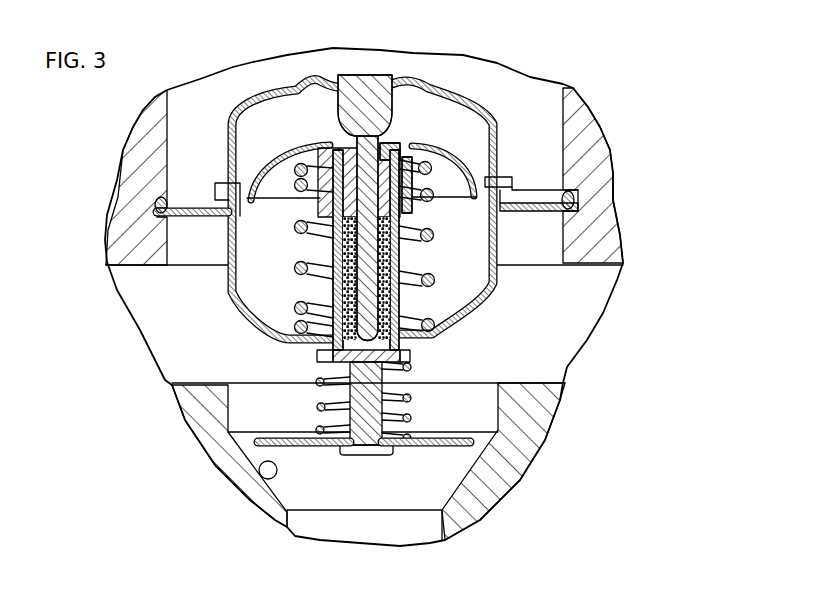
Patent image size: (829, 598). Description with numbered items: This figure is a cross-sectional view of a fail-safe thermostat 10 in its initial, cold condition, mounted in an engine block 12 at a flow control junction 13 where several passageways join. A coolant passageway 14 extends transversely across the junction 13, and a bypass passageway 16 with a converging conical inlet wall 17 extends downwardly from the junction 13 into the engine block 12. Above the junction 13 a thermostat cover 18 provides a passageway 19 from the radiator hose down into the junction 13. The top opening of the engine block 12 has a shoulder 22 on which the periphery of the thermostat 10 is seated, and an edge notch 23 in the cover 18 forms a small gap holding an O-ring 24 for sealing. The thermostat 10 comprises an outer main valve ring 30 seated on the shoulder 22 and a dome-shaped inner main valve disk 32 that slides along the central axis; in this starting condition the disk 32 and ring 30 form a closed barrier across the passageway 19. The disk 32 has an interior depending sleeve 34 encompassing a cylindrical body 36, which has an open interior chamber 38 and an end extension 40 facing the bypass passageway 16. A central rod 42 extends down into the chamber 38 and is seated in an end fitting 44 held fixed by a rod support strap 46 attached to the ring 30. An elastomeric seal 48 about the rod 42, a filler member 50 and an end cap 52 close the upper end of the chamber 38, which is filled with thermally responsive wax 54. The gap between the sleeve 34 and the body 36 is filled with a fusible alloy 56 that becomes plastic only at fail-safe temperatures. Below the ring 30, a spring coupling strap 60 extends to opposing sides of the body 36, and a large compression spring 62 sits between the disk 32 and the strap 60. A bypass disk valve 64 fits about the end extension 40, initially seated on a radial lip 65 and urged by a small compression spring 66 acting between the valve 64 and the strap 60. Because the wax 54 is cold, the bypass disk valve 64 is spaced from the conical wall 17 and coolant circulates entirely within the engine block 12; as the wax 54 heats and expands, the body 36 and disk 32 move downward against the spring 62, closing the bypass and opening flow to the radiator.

The thermostat 10 is at (516, 52).
The engine block 12 is at (537, 450).
The flow control junction 13 is at (192, 345).
The coolant passageway 14 is at (160, 305).
The bypass passageway 16 is at (393, 529).
The conical inlet wall 17 is at (252, 507).
The thermostat cover 18 is at (598, 140).
The passageway 19 is at (531, 97).
The shoulder 22 is at (612, 240).
The edge notch 23 is at (612, 204).
The O-ring 24 is at (156, 204).
The outer main valve ring 30 is at (508, 186).
The inner main valve disk 32 is at (441, 160).
The interior depending sleeve 34 is at (414, 210).
The cylindrical body 36 is at (399, 261).
The interior chamber 38 is at (401, 300).
The end extension 40 is at (350, 398).
The central rod 42 is at (353, 103).
The end fitting 44 is at (373, 79).
The rod support strap 46 is at (252, 105).
The elastomeric seal 48 is at (327, 147).
The filler member 50 is at (352, 156).
The end cap 52 is at (390, 143).
The thermally responsive wax 54 is at (348, 253).
The fusible alloy 56 is at (318, 200).
The spring coupling strap 60 is at (470, 304).
The large compression spring 62 is at (440, 279).
The bypass disk valve 64 is at (293, 449).
The radial lip 65 is at (380, 458).
The small compression spring 66 is at (405, 396).